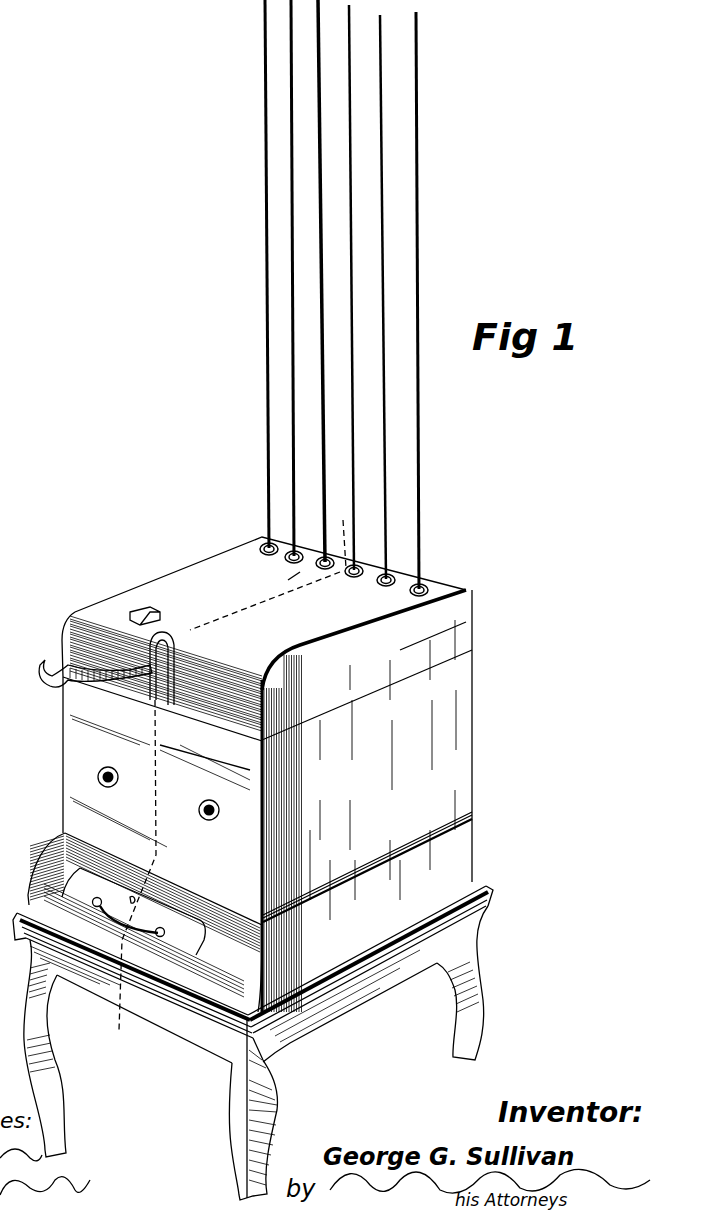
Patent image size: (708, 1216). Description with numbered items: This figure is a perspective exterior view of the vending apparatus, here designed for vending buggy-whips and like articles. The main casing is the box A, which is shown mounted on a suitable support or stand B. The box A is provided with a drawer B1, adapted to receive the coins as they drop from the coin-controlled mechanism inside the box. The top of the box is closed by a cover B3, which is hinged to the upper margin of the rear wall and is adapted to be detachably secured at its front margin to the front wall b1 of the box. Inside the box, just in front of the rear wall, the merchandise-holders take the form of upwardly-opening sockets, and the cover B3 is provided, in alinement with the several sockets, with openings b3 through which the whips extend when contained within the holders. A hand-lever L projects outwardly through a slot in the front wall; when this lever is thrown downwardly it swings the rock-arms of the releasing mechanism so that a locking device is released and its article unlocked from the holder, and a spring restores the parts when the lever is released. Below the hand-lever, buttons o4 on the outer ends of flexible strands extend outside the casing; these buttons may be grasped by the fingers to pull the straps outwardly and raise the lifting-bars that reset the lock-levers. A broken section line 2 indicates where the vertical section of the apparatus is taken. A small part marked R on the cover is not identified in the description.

The box A is at (410, 775).
The support or stand B is at (380, 985).
The drawer B1 is at (158, 908).
The cover B3 is at (432, 639).
The front wall b1 is at (205, 752).
The openings b3 is at (286, 560).
The hand-lever L is at (140, 680).
The pin or stud R is at (152, 606).
The buttons o4 is at (118, 777).
The section line 2 2 is at (229, 773).